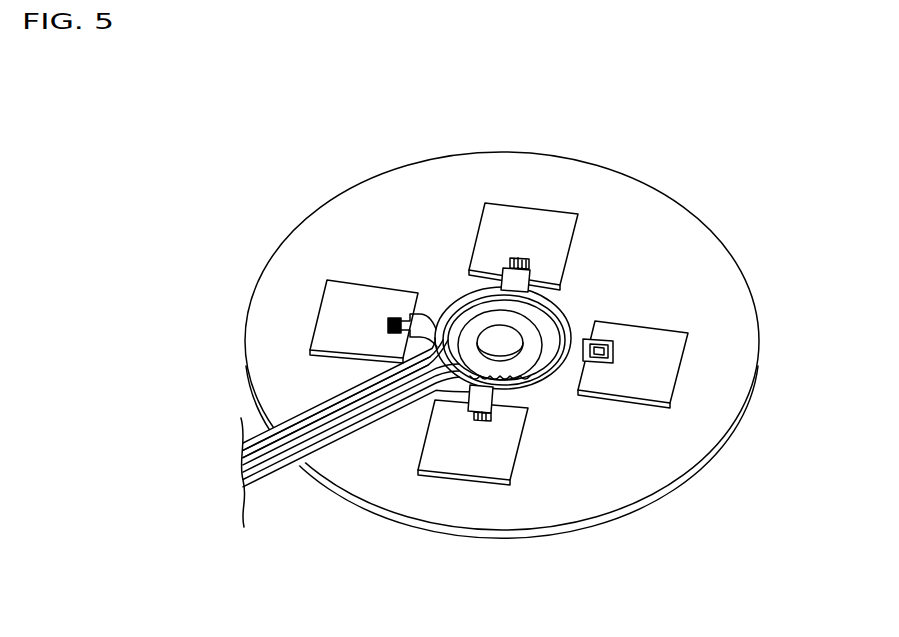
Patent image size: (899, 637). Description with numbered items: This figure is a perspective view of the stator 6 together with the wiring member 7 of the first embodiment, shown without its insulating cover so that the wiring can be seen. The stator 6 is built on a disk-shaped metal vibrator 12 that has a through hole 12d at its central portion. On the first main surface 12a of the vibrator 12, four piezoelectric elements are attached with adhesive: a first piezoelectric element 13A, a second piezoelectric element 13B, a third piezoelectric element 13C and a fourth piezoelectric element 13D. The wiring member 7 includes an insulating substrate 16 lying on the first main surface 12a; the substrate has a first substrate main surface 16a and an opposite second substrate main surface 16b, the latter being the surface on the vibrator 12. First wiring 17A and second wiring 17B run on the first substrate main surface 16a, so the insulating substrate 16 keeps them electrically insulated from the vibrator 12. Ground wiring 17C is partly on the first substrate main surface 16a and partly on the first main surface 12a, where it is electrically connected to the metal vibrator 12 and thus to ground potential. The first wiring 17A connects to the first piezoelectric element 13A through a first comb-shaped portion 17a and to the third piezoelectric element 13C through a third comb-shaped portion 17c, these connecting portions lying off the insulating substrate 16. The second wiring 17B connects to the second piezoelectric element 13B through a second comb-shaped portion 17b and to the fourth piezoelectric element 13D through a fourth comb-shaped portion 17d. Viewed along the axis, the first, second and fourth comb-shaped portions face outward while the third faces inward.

The stator 6 is at (532, 297).
The vibrator 12 is at (532, 320).
The first main surface 12a is at (669, 215).
The through hole 12d is at (490, 346).
The first piezoelectric element 13A is at (332, 302).
The second piezoelectric element 13B is at (553, 247).
The third piezoelectric element 13C is at (667, 355).
The fourth piezoelectric element 13D is at (502, 453).
The insulating substrate 16 is at (359, 367).
The first substrate main surface 16a is at (457, 302).
The second substrate main surface 16b is at (311, 473).
The wiring member 7 is at (311, 473).
The first wiring 17A is at (293, 428).
The second wiring 17B is at (255, 472).
The ground wiring 17C is at (270, 450).
The first comb-shaped portion 17a is at (388, 329).
The second comb-shaped portion 17b is at (526, 262).
The third comb-shaped portion 17c is at (597, 336).
The fourth comb-shaped portion 17d is at (483, 420).